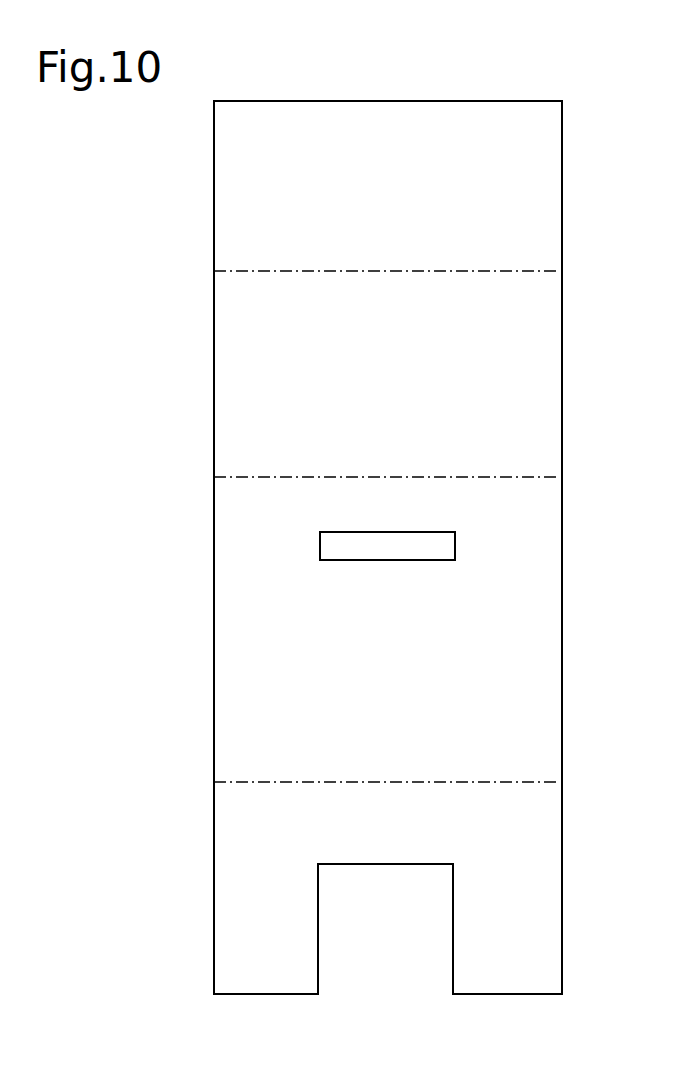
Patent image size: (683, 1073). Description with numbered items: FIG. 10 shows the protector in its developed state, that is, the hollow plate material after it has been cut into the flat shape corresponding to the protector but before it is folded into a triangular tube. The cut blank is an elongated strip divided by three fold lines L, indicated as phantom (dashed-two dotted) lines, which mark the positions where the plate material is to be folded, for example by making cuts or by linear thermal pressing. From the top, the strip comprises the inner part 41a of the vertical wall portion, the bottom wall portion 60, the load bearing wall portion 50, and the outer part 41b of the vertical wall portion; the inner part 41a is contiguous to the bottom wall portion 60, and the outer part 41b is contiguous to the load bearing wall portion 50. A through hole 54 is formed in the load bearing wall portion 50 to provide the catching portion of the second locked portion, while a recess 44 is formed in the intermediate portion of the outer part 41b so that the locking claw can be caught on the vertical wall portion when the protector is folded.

The inner part 41a is at (552, 204).
The outer part 41b is at (550, 892).
The bottom wall portion 60 is at (552, 381).
The load bearing wall portion 50 is at (552, 634).
The through hole 54 is at (392, 552).
The recess 44 is at (395, 963).
The fold line L is at (254, 272).